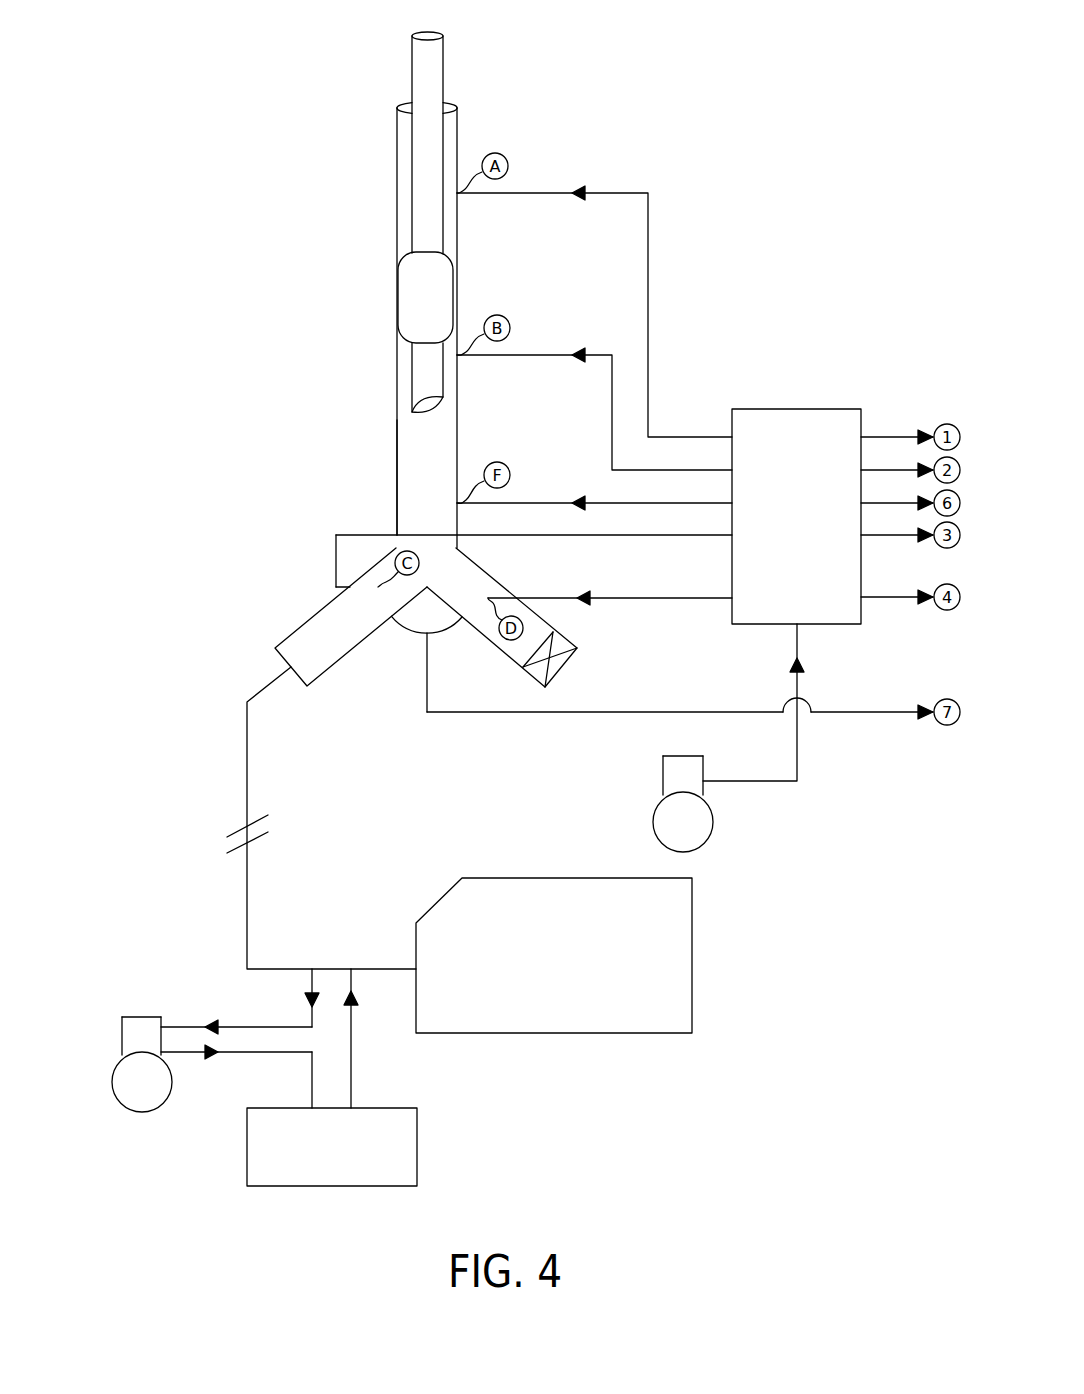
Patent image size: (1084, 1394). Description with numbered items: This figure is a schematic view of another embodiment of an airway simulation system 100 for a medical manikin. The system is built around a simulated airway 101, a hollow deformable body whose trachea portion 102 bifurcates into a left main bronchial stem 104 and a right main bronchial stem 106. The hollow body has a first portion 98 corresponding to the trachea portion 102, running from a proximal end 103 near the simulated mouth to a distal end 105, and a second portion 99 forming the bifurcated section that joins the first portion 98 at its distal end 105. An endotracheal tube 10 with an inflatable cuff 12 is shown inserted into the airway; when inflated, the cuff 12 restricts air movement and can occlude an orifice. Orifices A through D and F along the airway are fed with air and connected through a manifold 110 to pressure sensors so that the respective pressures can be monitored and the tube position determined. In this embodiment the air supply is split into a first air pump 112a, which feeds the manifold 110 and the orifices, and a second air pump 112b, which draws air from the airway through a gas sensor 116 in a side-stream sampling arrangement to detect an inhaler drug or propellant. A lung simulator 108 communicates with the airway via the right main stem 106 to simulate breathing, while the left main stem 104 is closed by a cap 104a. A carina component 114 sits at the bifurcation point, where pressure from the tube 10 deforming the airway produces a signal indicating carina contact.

The endotracheal tube 10 is at (412, 62).
The inflatable cuff 12 is at (407, 298).
The first portion 98 is at (340, 364).
The second portion 99 is at (242, 620).
The airway simulation system 100 is at (720, 128).
The simulated airway 101 is at (457, 128).
The trachea portion 102 is at (407, 453).
The proximal end 103 is at (397, 110).
The left main bronchial stem 104 is at (498, 583).
The cap 104a is at (563, 667).
The distal end 105 is at (395, 548).
The right main bronchial stem 106 is at (327, 605).
The lung simulator 108 is at (543, 1033).
The manifold 110 is at (797, 409).
The first air pump 112a is at (713, 828).
The second air pump 112b is at (115, 1065).
The carina component 114 is at (407, 633).
The gas sensor 116 is at (327, 1186).